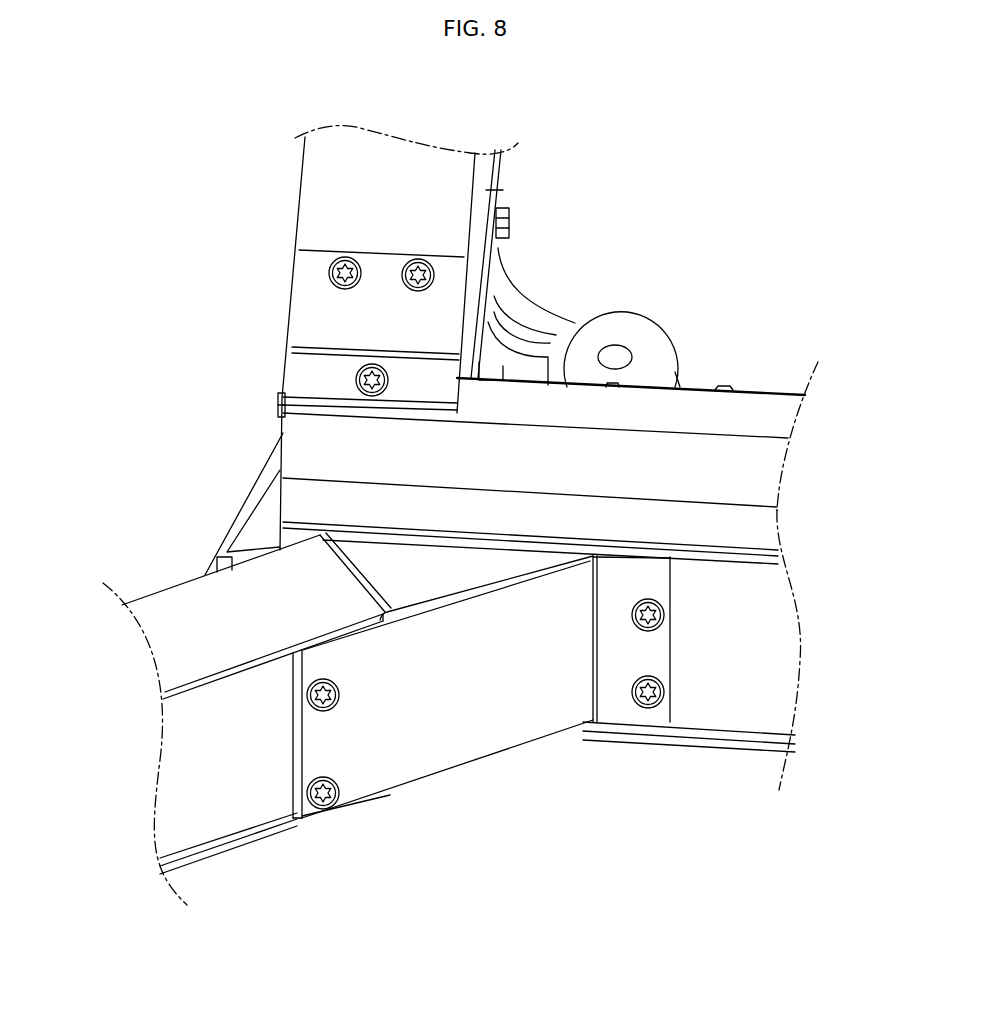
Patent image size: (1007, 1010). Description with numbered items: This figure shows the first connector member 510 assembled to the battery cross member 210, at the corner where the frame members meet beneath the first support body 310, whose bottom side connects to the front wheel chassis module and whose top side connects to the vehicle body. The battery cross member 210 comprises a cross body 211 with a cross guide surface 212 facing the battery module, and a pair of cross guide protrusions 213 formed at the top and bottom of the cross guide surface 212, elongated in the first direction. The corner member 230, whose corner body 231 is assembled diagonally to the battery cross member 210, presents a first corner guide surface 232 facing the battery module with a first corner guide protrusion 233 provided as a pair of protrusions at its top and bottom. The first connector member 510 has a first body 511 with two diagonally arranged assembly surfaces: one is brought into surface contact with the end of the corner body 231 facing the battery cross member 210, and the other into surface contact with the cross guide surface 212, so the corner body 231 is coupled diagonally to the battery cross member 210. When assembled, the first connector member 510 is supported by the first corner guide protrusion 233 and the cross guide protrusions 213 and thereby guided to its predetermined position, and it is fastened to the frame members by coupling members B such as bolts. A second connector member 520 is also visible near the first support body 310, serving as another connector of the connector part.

The battery cross member 210 is at (835, 442).
The cross body 211 is at (757, 480).
The cross guide surface 212 is at (780, 655).
The cross guide protrusions 213 is at (752, 560).
The corner member 230 is at (110, 514).
The corner body 231 is at (212, 610).
The first corner guide surface 232 is at (195, 812).
The first corner guide protrusion 233 is at (215, 693).
The first support body 310 is at (318, 196).
The first connector member 510 is at (484, 856).
The first body 511 is at (458, 595).
The second connector member 520 is at (248, 497).
The coupling member B is at (648, 710).